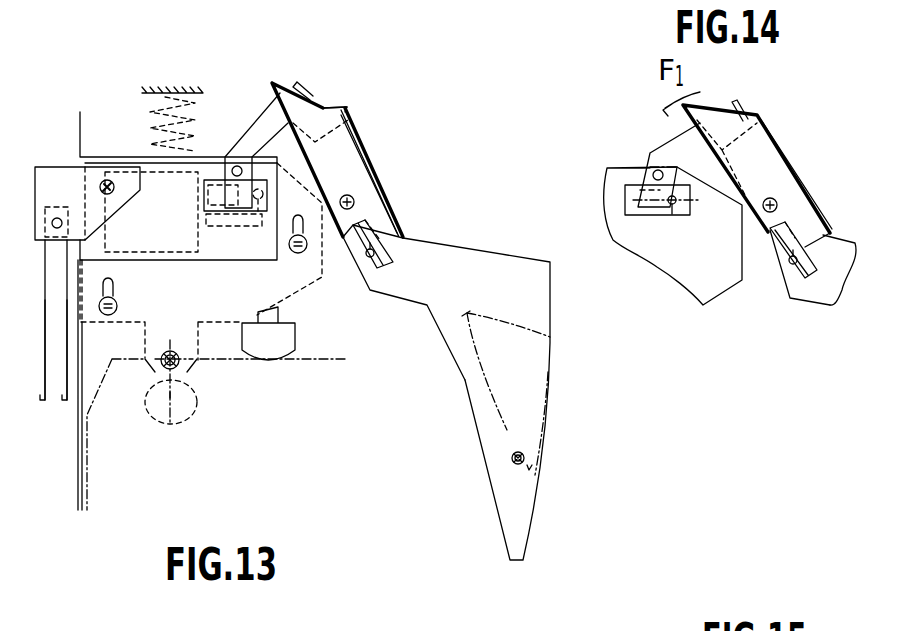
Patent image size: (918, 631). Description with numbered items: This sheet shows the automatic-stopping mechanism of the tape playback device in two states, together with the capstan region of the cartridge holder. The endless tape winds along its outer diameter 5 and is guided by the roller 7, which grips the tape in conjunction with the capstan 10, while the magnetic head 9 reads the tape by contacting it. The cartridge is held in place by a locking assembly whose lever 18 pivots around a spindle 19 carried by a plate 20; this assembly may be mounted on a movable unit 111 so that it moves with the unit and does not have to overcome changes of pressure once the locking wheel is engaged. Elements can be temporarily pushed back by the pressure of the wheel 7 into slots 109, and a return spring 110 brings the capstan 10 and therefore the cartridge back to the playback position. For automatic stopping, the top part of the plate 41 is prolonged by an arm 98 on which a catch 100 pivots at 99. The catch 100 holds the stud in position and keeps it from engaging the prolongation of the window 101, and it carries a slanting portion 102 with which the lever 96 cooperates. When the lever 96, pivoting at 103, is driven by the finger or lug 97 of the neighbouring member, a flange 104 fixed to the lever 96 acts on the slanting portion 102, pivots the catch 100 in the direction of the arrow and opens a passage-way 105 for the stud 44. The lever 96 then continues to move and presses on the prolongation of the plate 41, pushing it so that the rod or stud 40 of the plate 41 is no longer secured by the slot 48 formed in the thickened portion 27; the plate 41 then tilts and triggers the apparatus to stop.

In FIG. 13, the outer diameter 5 is at (169, 395).
In FIG. 13, the roller 7 is at (165, 418).
In FIG. 13, the magnetic head 9 is at (278, 347).
In FIG. 13, the capstan 10 is at (172, 352).
In FIG. 13, the lever 18 is at (53, 387).
In FIG. 13, the spindle 19 is at (55, 236).
In FIG. 13, the plate 20 is at (53, 177).
In FIG. 13, the thickened portion 27 is at (492, 370).
In FIG. 13, the rod 40 is at (514, 464).
In FIG. 13, the plate 41 is at (490, 262).
In FIG. 14, the plate 41 is at (820, 290).
In FIG. 13, the stud 44 is at (385, 296).
In FIG. 14, the stud 44 is at (803, 305).
In FIG. 13, the slot 48 is at (513, 453).
In FIG. 13, the lever 96 is at (268, 125).
In FIG. 14, the lever 96 is at (680, 147).
In FIG. 13, the lug 97 is at (258, 203).
In FIG. 14, the lug 97 is at (673, 204).
In FIG. 13, the arm 98 is at (385, 172).
In FIG. 13, the pivot 99 is at (355, 202).
In FIG. 14, the pivot 99 is at (777, 203).
In FIG. 13, the catch 100 is at (340, 150).
In FIG. 14, the catch 100 is at (767, 167).
In FIG. 13, the window 101 is at (353, 243).
In FIG. 13, the slanting portion 102 is at (323, 110).
In FIG. 14, the slanting portion 102 is at (703, 105).
In FIG. 13, the pivot 103 is at (237, 166).
In FIG. 14, the pivot 103 is at (653, 172).
In FIG. 13, the flange 104 is at (300, 87).
In FIG. 14, the flange 104 is at (747, 120).
In FIG. 14, the passage-way 105 is at (783, 243).
In FIG. 13, the slots 109 is at (114, 280).
In FIG. 13, the return spring 110 is at (150, 133).
In FIG. 13, the movable unit 111 is at (227, 307).
In FIG. 14, the movable unit 111 is at (670, 267).